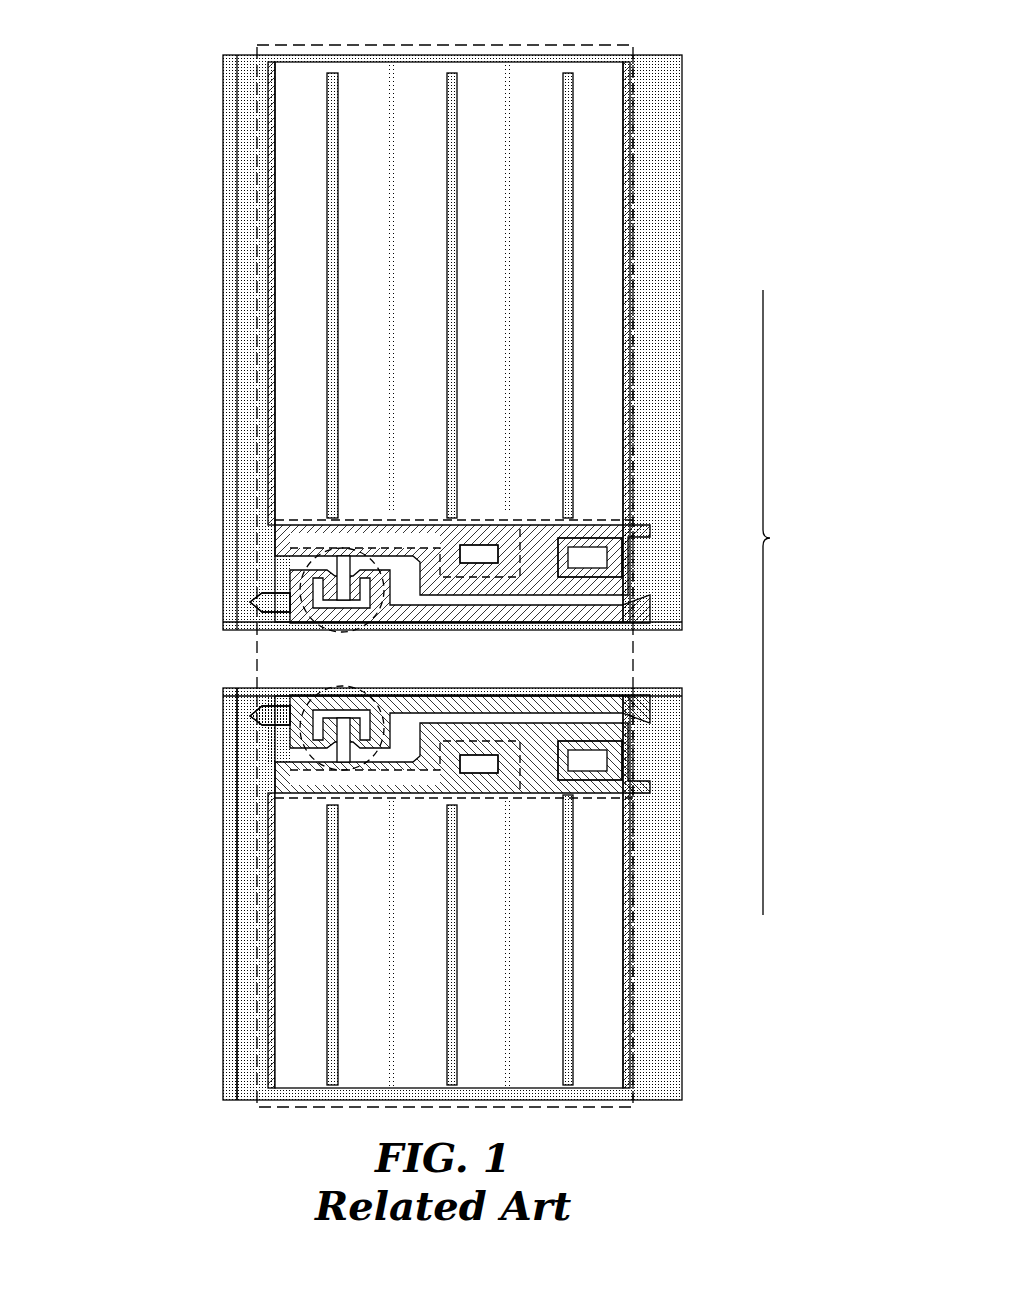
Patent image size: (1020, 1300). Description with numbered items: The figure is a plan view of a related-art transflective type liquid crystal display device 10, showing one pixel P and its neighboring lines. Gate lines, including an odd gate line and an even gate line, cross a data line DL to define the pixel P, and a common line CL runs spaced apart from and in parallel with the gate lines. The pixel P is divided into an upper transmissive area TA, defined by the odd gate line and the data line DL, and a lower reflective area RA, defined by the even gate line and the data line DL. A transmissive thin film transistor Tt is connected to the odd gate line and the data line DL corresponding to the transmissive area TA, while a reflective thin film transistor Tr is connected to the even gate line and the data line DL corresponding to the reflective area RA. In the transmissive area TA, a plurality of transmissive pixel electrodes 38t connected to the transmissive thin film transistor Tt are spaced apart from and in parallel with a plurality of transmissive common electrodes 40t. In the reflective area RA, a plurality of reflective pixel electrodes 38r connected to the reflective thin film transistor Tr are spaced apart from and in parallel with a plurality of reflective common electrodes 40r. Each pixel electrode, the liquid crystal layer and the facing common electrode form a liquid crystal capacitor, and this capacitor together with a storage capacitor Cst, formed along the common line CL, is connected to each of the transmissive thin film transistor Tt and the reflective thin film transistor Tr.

The transflective type liquid crystal display device 10 is at (461, 23).
The transmissive common electrode 40t is at (512, 162).
The transmissive pixel electrode 38t is at (570, 212).
The transmissive area TA is at (640, 285).
The data line DL is at (238, 432).
The common line CL is at (252, 528).
The transmissive thin film transistor Tt is at (300, 575).
The storage capacitor Cst is at (520, 540).
The pixel P is at (777, 602).
The reflective thin film transistor Tr is at (300, 745).
The reflective area RA is at (640, 905).
The reflective pixel electrode 38r is at (575, 975).
The reflective common electrode 40r is at (512, 1025).